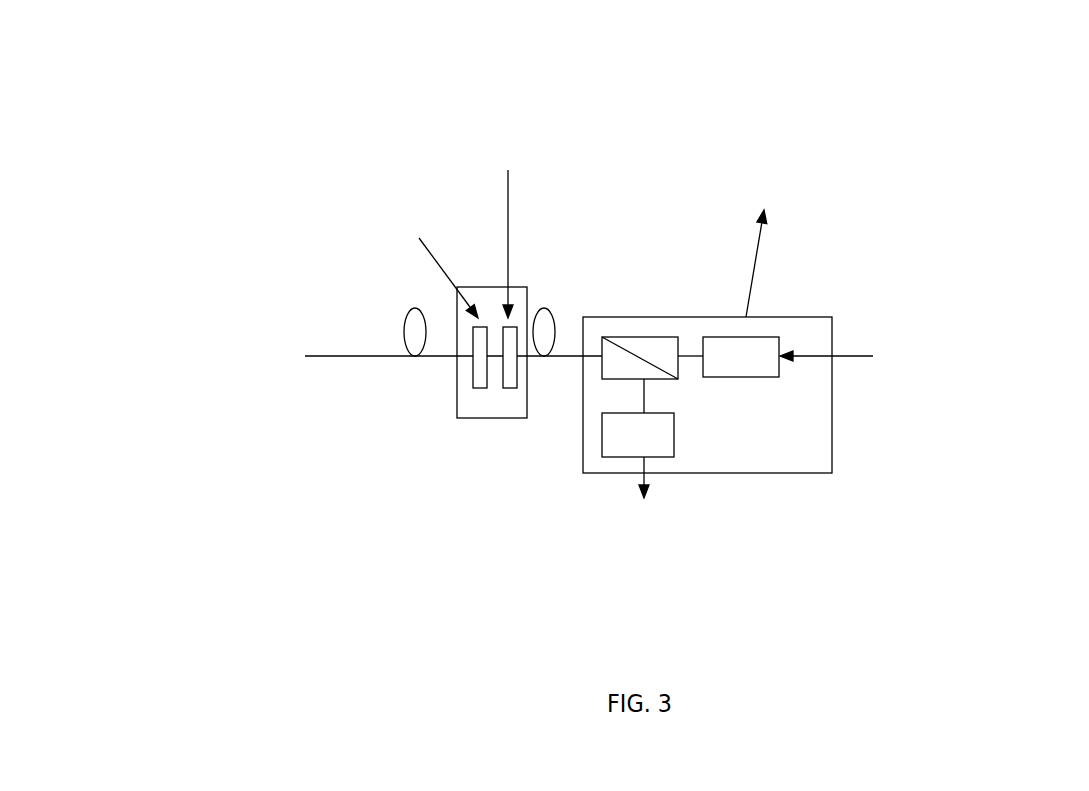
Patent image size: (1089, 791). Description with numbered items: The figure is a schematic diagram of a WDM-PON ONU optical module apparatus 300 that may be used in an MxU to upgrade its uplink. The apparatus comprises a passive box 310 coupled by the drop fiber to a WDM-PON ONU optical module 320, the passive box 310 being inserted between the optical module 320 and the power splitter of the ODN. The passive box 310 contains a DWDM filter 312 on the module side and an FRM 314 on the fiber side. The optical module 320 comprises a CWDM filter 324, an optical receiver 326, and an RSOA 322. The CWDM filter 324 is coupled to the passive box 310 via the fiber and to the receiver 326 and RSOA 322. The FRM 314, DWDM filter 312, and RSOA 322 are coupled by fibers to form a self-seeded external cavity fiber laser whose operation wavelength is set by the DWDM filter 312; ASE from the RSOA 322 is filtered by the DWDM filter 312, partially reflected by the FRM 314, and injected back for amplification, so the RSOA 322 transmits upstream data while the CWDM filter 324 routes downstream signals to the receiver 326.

The WDM-PON ONU optical module apparatus 300 is at (128, 61).
The passive box 310 is at (520, 287).
The DWDM filter 312 is at (517, 386).
The FRM 314 is at (470, 388).
The WDM-PON ONU optical module 320 is at (832, 317).
The RSOA 322 is at (765, 377).
The CWDM filter 324 is at (660, 378).
The optical receiver 326 is at (674, 447).